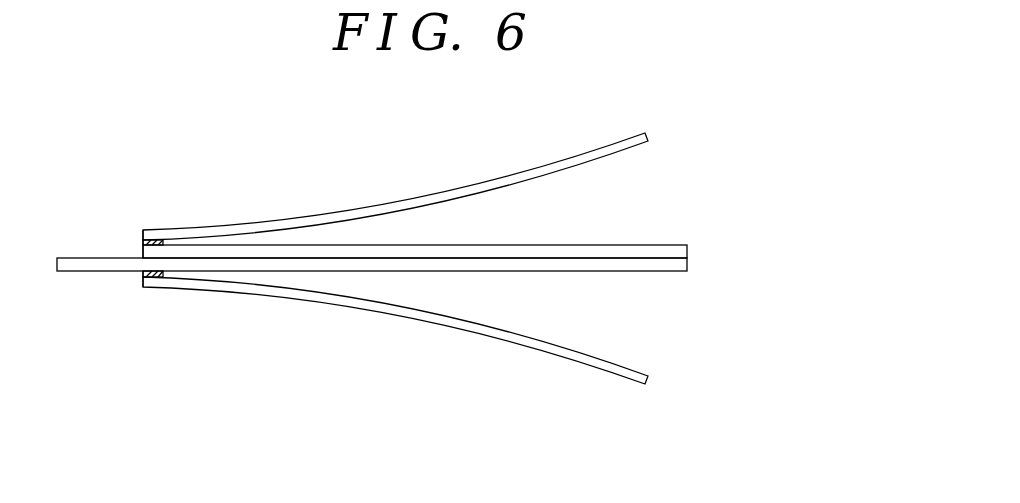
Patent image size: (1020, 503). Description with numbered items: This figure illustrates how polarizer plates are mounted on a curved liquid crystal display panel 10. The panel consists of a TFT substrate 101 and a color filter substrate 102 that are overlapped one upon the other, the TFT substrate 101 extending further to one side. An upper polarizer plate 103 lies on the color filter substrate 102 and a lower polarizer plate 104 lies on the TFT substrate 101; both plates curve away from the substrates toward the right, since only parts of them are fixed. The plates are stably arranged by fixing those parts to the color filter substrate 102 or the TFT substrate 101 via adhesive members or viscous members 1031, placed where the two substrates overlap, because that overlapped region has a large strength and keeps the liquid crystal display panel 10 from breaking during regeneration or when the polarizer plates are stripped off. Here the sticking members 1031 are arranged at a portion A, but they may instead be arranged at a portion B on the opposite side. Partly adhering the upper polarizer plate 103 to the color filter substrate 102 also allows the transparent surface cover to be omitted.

The liquid crystal display panel 10 is at (643, 220).
The TFT substrate 101 is at (688, 265).
The color filter substrate 102 is at (688, 249).
The upper polarizer plate 103 is at (480, 182).
The lower polarizer plate 104 is at (474, 334).
The adhesive member or viscous member 1031 is at (142, 242).
The portion A is at (143, 303).
The portion B is at (682, 302).